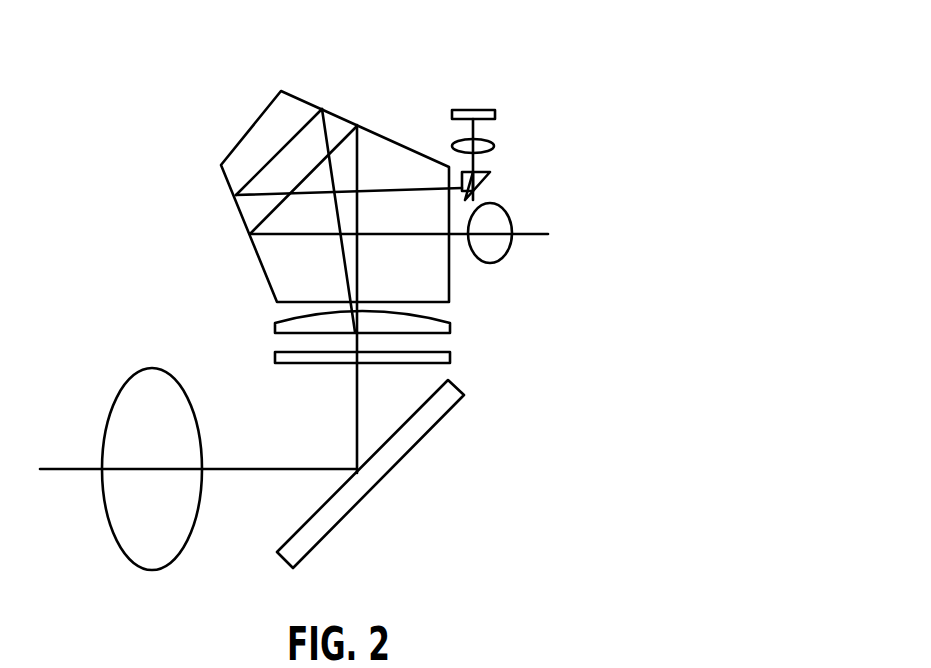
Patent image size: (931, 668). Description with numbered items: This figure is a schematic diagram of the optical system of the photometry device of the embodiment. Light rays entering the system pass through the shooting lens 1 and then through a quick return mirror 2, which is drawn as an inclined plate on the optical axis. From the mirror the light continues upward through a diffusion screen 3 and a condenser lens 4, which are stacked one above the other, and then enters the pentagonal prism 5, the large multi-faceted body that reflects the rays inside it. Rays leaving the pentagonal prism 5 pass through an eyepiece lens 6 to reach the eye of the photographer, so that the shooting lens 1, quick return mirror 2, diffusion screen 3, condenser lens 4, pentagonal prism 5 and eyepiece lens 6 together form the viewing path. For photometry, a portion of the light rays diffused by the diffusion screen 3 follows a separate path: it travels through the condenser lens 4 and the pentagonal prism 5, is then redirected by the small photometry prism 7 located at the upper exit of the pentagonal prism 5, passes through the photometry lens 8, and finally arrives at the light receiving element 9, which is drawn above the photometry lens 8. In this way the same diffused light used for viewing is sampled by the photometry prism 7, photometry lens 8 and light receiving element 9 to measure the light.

The shooting lens 1 is at (190, 515).
The quick return mirror 2 is at (328, 522).
The diffusion screen 3 is at (452, 357).
The condenser lens 4 is at (450, 325).
The pentagonal prism 5 is at (293, 108).
The eyepiece lens 6 is at (478, 258).
The photometry prism 7 is at (490, 173).
The photometry lens 8 is at (487, 133).
The light receiving element 9 is at (485, 109).